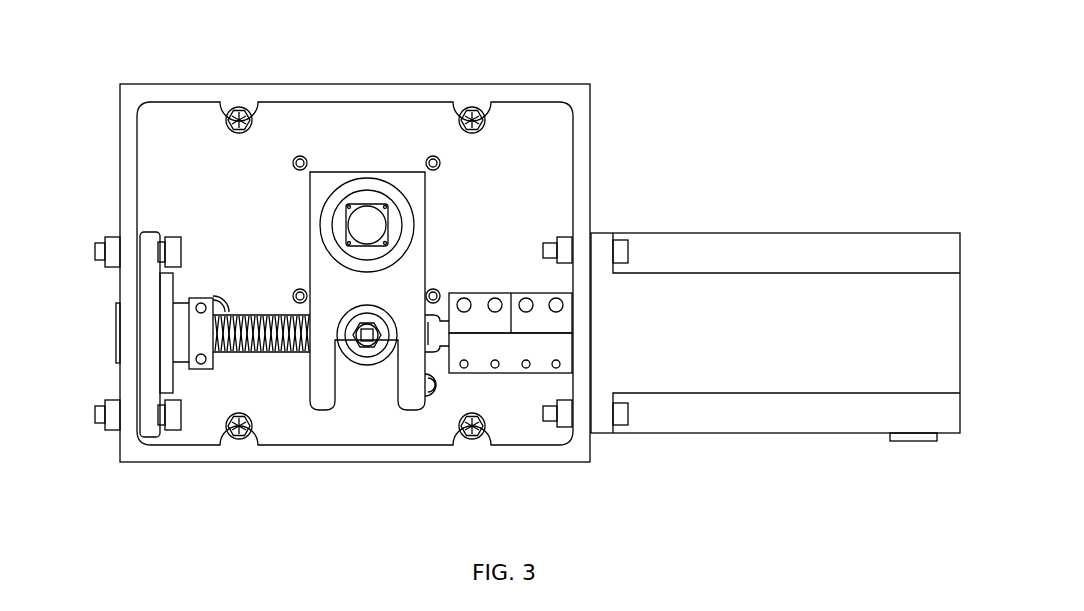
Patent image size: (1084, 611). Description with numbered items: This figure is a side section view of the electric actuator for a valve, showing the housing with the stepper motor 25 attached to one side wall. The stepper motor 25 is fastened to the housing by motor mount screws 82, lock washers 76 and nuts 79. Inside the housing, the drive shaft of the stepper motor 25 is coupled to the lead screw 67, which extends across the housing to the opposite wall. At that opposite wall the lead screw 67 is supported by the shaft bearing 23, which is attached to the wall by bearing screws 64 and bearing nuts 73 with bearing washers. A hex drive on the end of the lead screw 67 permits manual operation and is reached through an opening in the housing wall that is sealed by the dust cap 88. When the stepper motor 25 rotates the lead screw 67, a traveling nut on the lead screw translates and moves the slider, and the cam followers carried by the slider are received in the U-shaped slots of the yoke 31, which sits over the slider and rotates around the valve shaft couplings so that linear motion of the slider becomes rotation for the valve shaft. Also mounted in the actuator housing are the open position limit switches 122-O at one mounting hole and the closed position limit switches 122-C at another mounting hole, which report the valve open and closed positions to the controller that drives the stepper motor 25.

The yoke 31 is at (355, 170).
The nuts 79 is at (563, 237).
The lock washers 76 is at (573, 245).
The motor mount screws 82 is at (622, 240).
The stepper motor 25 is at (740, 233).
The bearing nuts 73 is at (86, 333).
The bearing screws 64 is at (100, 245).
The dust cap 88 is at (117, 330).
The shaft bearing 23 is at (152, 342).
The open position limit switches 122-O is at (215, 280).
The lead screw 67 is at (263, 353).
The closed position limit switches 122-C is at (428, 402).